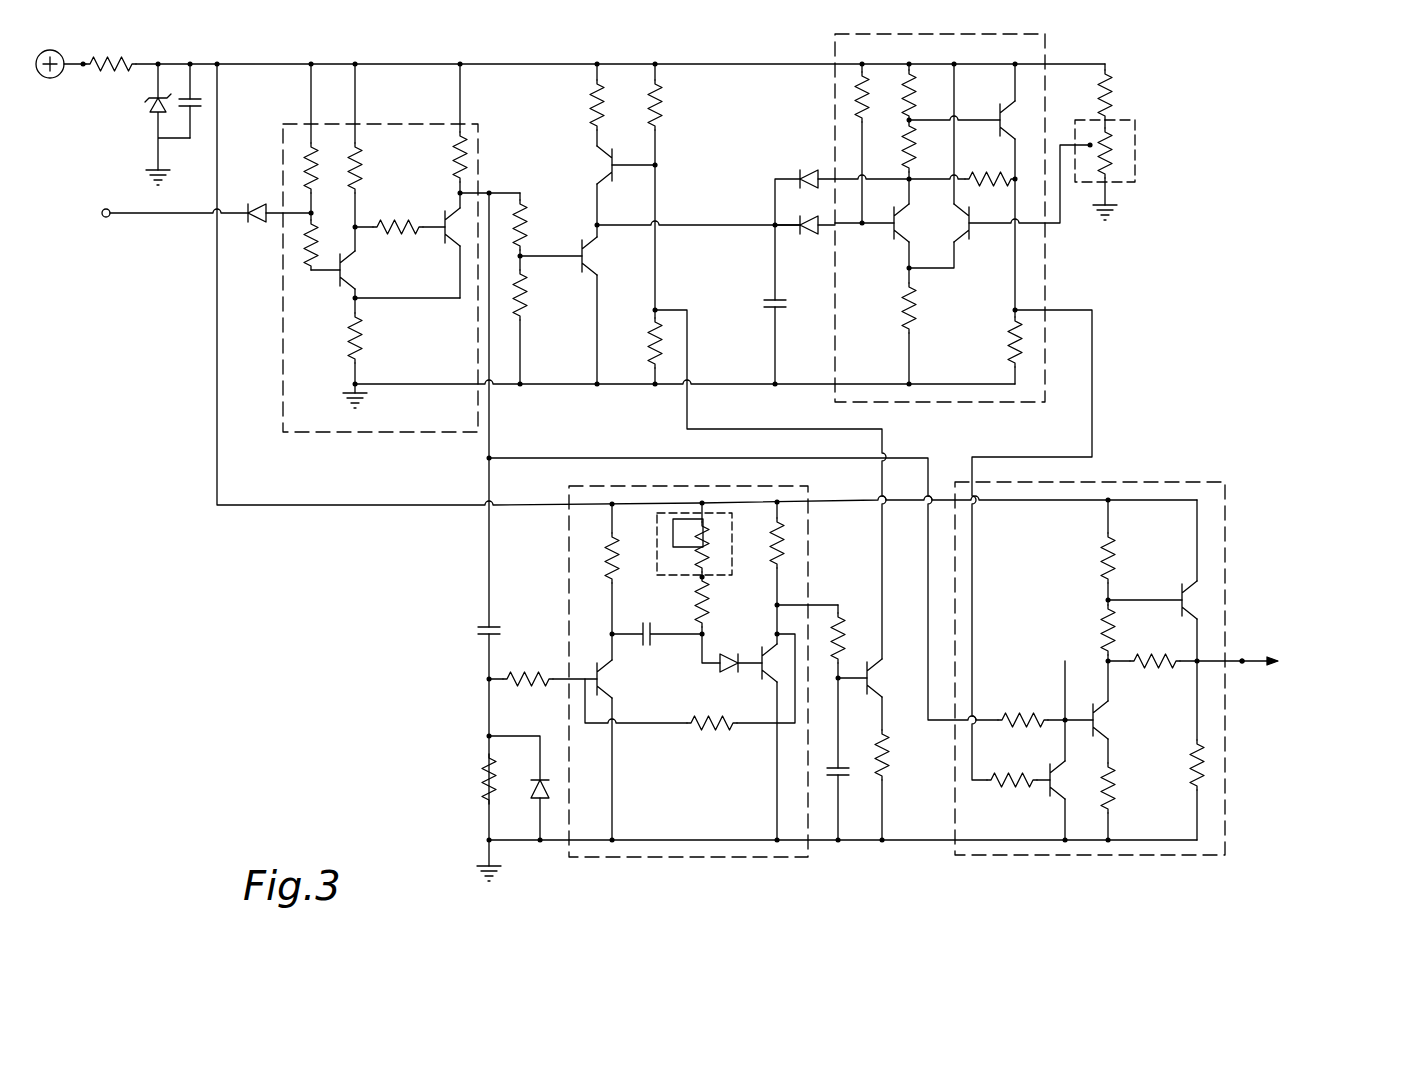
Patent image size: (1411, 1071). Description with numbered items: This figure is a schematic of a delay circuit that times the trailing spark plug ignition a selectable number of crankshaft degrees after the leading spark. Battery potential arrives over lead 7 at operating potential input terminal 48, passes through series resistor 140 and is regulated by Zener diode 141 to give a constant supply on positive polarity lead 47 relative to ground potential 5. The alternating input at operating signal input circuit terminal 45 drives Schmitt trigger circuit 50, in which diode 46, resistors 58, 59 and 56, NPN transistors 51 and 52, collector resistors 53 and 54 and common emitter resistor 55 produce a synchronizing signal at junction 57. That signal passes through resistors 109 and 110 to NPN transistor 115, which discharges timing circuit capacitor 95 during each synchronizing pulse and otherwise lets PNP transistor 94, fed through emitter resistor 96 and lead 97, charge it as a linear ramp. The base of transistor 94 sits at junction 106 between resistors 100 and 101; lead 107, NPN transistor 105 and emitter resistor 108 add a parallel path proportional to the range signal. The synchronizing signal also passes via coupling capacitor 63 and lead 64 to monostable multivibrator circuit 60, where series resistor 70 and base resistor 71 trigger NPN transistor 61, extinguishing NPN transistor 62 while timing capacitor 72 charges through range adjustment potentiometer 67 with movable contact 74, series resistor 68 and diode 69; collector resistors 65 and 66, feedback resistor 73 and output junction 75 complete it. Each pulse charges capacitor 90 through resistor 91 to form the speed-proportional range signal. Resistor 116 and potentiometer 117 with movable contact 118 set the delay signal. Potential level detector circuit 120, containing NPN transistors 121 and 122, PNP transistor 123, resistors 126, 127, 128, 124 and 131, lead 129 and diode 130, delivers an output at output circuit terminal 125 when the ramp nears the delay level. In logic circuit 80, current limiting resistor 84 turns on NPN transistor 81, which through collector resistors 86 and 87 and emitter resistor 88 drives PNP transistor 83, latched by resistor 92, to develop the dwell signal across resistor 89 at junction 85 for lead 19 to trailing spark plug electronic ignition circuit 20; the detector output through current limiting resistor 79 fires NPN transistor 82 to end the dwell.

The lead 7 is at (72, 70).
The operating potential input terminal 48 is at (83, 64).
The series resistor 140 is at (120, 64).
The Zener diode 141 is at (150, 105).
The point of reference or ground potential 5 is at (165, 176).
The operating signal input circuit terminal 45 is at (106, 217).
The diode 46 is at (258, 220).
The positive polarity lead 47 is at (515, 64).
The Schmitt trigger circuit 50 is at (478, 130).
The NPN transistor 51 is at (352, 259).
The NPN transistor 52 is at (445, 240).
The collector resistor 53 is at (362, 176).
The collector resistor 54 is at (468, 156).
The common emitter resistor 55 is at (366, 341).
The resistor 56 is at (420, 226).
The junction 57 is at (460, 193).
The resistor 58 is at (313, 182).
The resistor 59 is at (311, 270).
The resistor 109 is at (528, 222).
The resistor 110 is at (528, 296).
The NPN transistor 115 is at (590, 241).
The PNP transistor 94 is at (604, 174).
The emitter resistor 96 is at (600, 108).
The resistor 100 is at (660, 106).
The lead 97 is at (683, 225).
The junction 106 is at (655, 310).
The resistor 101 is at (652, 345).
The lead 107 is at (708, 431).
The diode 130 is at (810, 236).
The timing circuit capacitor 95 is at (778, 312).
The potential level detector circuit 120 is at (830, 37).
The resistor 126 is at (855, 89).
The resistor 127 is at (911, 100).
The resistor 128 is at (906, 148).
The lead 129 is at (980, 123).
The PNP transistor 123 is at (999, 108).
The NPN transistor 121 is at (897, 213).
The NPN transistor 122 is at (960, 241).
The emitter resistor 124 is at (918, 313).
The collector resistor 131 is at (1010, 349).
The output circuit terminal 125 is at (1012, 312).
The resistor 116 is at (1112, 86).
The movable contact 118 is at (1090, 143).
The potentiometer 117 is at (1137, 158).
The lead 64 is at (300, 505).
The coupling capacitor 63 is at (486, 624).
The monostable multivibrator circuit 60 is at (567, 575).
The collector resistor 65 is at (611, 572).
The NPN transistor 61 is at (612, 673).
The base resistor 71 is at (543, 675).
The feedback resistor 73 is at (698, 734).
The timing capacitor 72 is at (652, 628).
The range adjustment potentiometer 67 is at (732, 530).
The movable contact 74 is at (688, 548).
The series resistor 68 is at (697, 624).
The diode 69 is at (720, 670).
The NPN transistor 62 is at (772, 647).
The collector resistor 66 is at (785, 549).
The junction 75 is at (775, 606).
The resistor 91 is at (842, 638).
The NPN transistor 105 is at (872, 667).
The capacitor 90 is at (843, 779).
The emitter resistor 108 is at (890, 766).
The series resistor 70 is at (482, 786).
The logic circuit 80 is at (1143, 482).
The collector resistor 86 is at (1100, 549).
The collector resistor 87 is at (1100, 628).
The PNP transistor 83 is at (1200, 600).
The resistor 92 is at (1152, 655).
The junction 85 is at (1195, 665).
The lead 19 is at (1242, 661).
The trailing spark plug electronic ignition circuit 20 is at (1315, 668).
The current limiting resistor 84 is at (1020, 718).
The NPN transistor 81 is at (1106, 716).
The emitter resistor 88 is at (1114, 790).
The current limiting resistor 79 is at (1010, 778).
The NPN transistor 82 is at (1050, 796).
The resistor 89 is at (1210, 780).